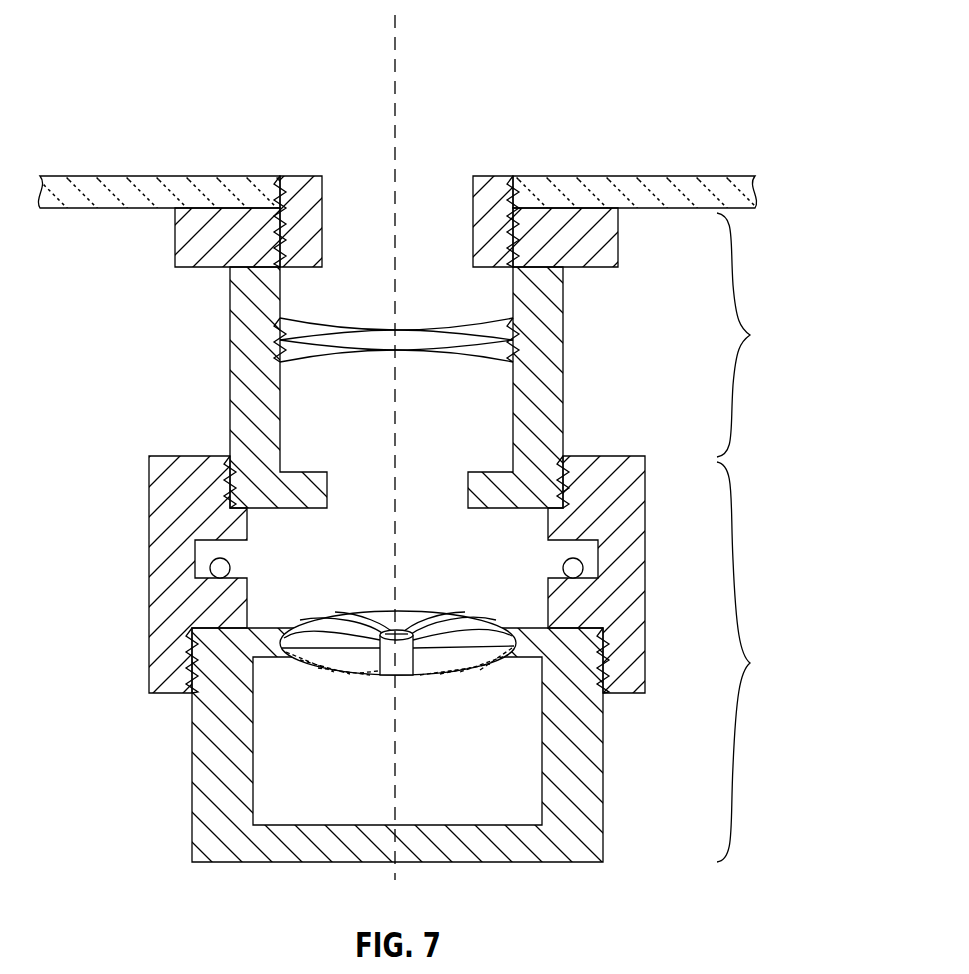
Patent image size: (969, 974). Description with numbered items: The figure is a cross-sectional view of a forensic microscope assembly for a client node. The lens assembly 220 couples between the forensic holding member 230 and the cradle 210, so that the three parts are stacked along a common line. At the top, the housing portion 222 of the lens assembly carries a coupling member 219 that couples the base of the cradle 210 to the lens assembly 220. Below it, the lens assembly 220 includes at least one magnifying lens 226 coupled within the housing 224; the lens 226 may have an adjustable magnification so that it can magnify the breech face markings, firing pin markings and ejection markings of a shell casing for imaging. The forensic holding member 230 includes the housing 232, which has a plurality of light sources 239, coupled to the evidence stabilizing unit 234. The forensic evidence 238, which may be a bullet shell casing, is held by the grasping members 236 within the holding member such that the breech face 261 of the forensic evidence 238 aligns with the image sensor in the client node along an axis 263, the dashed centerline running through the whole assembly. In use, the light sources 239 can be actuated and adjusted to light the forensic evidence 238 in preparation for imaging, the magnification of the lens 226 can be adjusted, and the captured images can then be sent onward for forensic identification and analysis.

The cradle 210 is at (655, 176).
The coupling member 219 is at (315, 229).
The housing portion 222 is at (592, 250).
The housing 224 is at (563, 305).
The lens 226 is at (392, 337).
The housing 232 is at (627, 510).
The light sources 239 is at (575, 566).
The evidence stabilizing unit 234 is at (596, 747).
The grasping members 236 is at (438, 662).
The forensic evidence 238 is at (392, 675).
The breech face 261 is at (397, 632).
The axis 263 is at (395, 118).
The lens assembly 220 is at (764, 335).
The forensic holding member 230 is at (764, 662).